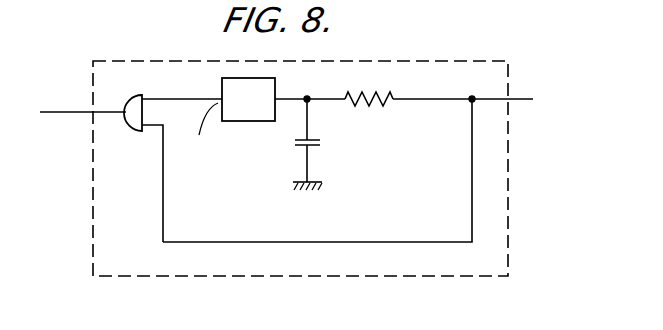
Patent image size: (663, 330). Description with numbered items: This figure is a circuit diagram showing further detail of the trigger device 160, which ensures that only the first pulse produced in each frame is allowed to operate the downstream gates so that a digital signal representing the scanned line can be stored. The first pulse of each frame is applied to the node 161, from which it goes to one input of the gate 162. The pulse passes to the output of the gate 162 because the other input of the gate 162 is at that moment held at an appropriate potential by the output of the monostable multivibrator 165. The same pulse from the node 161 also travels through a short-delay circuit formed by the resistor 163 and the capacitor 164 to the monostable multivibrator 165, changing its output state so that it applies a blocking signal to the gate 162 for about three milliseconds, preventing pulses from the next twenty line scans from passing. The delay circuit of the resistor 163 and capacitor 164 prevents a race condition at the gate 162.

The device 160 is at (84, 205).
The node 161 is at (472, 94).
The gate 162 is at (128, 101).
The resistor 163 is at (360, 107).
The capacitor 164 is at (330, 146).
The monostable multivibrator 165 is at (264, 115).